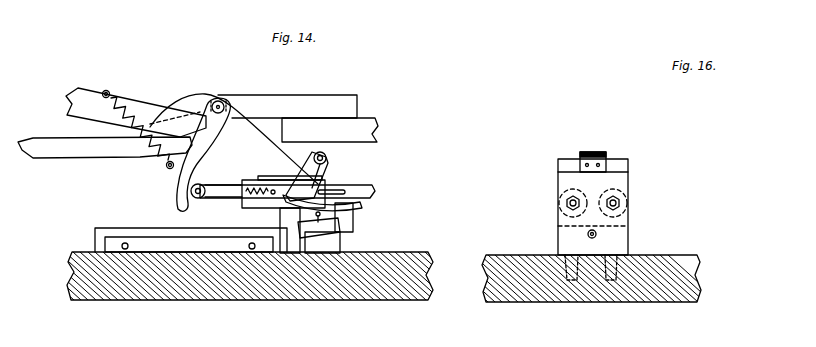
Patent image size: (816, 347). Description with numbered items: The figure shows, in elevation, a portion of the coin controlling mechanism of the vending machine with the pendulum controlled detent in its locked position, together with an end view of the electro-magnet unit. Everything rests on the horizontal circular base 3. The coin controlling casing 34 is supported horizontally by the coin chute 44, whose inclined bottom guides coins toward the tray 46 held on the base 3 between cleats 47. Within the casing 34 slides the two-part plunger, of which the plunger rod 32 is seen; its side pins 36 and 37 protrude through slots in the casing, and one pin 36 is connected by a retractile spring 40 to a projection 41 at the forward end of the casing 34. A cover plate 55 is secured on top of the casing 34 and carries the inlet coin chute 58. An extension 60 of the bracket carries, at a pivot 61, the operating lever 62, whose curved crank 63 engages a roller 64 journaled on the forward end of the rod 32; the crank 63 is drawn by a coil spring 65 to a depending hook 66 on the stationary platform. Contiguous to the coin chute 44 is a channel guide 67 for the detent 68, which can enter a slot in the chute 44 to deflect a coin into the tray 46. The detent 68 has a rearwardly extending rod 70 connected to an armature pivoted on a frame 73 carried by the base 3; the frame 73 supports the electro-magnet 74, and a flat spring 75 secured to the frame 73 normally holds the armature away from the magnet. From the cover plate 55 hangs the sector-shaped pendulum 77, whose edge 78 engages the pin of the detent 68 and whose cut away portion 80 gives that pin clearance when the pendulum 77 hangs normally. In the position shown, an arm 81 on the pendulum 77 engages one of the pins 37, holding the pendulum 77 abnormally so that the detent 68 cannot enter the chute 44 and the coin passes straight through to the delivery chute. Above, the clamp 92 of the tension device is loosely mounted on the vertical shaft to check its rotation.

In FIG. 14, the circular base 3 is at (110, 286).
In FIG. 16, the circular base 3 is at (668, 263).
In FIG. 14, the plunger rod 32 is at (218, 184).
In FIG. 14, the casing 34 is at (257, 203).
In FIG. 14, the side pin 36 is at (353, 184).
In FIG. 14, the side pin 37 is at (273, 196).
In FIG. 14, the retractile spring 40 is at (258, 172).
In FIG. 14, the projection 41 is at (243, 194).
In FIG. 14, the coin chute 44 is at (353, 222).
In FIG. 14, the tray 46 is at (100, 228).
In FIG. 14, the cleats 47 is at (104, 240).
In FIG. 14, the cover plate 55 is at (265, 176).
In FIG. 14, the inlet coin chute 58 is at (137, 105).
In FIG. 14, the extension 60 is at (287, 106).
In FIG. 14, the pivot 61 is at (219, 104).
In FIG. 14, the operating lever 62 is at (105, 147).
In FIG. 14, the curved crank 63 is at (178, 182).
In FIG. 14, the roller 64 is at (198, 199).
In FIG. 14, the coil spring 65 is at (133, 125).
In FIG. 14, the depending hook 66 is at (106, 90).
In FIG. 14, the channel guide 67 is at (343, 235).
In FIG. 14, the detent 68 is at (320, 240).
In FIG. 16, the rod 70 is at (590, 240).
In FIG. 16, the frame 73 is at (610, 163).
In FIG. 16, the electro-magnet 74 is at (558, 188).
In FIG. 16, the flat spring 75 is at (589, 152).
In FIG. 14, the pendulum 77 is at (310, 177).
In FIG. 14, the edge 78 is at (361, 206).
In FIG. 14, the cut away portion 80 is at (303, 202).
In FIG. 14, the arm 81 is at (327, 161).
In FIG. 14, the clamp 92 is at (330, 130).